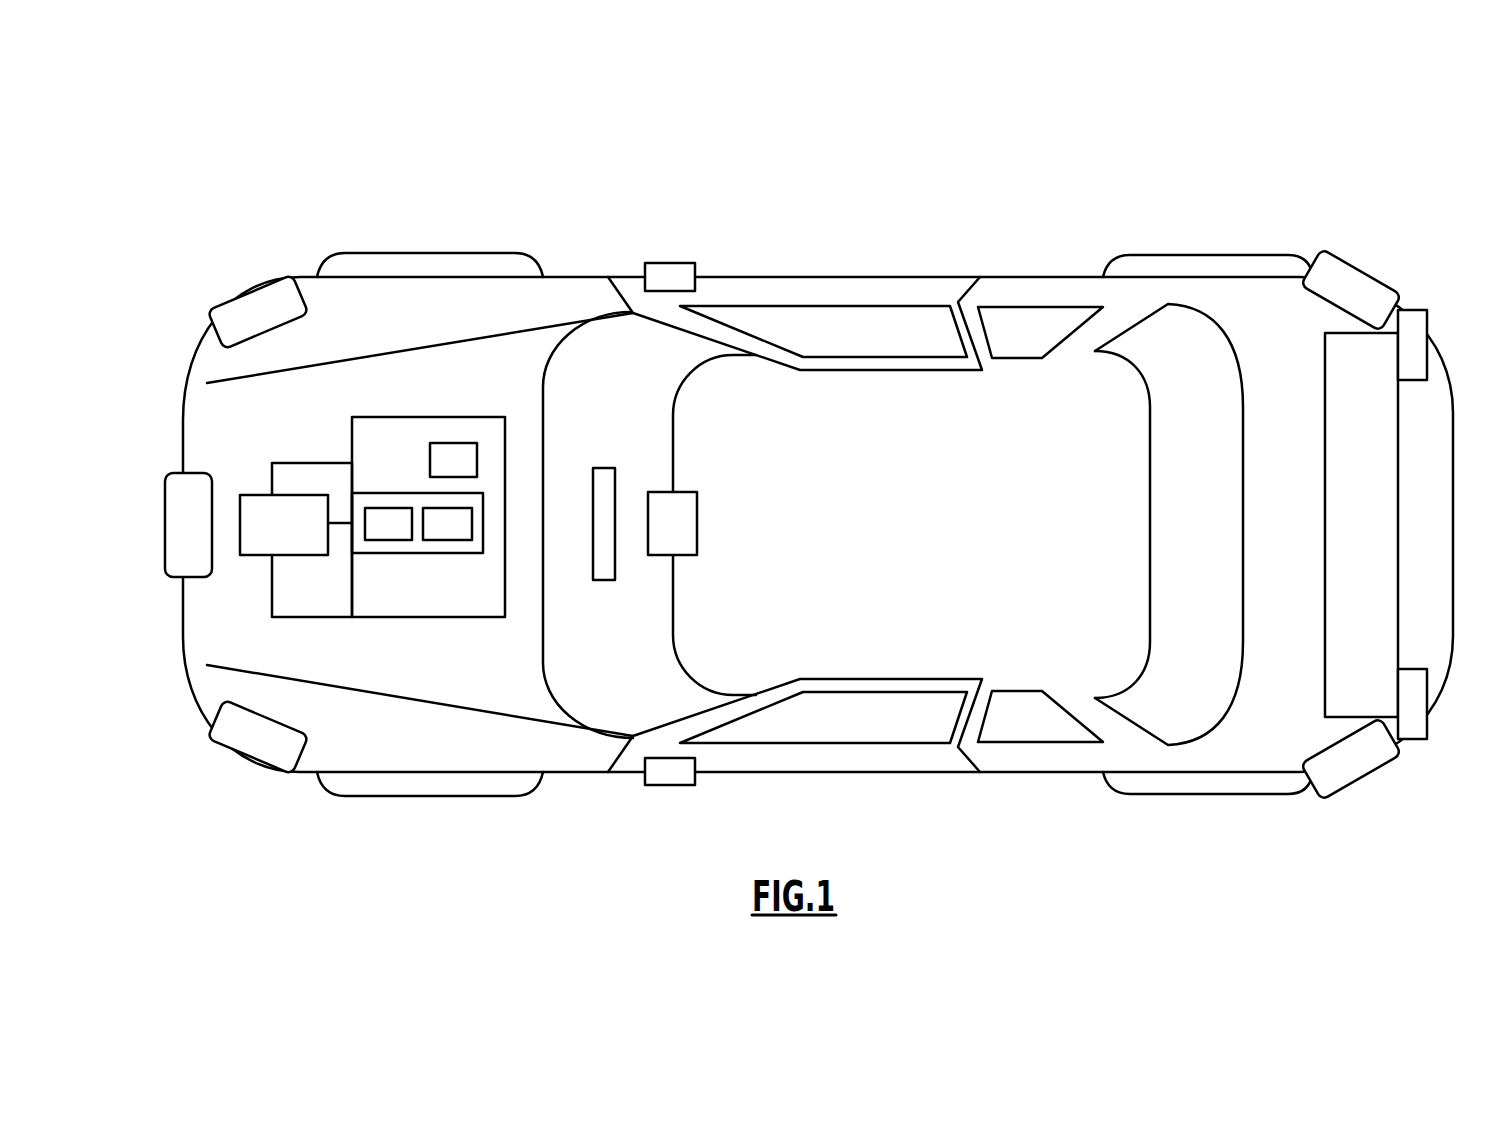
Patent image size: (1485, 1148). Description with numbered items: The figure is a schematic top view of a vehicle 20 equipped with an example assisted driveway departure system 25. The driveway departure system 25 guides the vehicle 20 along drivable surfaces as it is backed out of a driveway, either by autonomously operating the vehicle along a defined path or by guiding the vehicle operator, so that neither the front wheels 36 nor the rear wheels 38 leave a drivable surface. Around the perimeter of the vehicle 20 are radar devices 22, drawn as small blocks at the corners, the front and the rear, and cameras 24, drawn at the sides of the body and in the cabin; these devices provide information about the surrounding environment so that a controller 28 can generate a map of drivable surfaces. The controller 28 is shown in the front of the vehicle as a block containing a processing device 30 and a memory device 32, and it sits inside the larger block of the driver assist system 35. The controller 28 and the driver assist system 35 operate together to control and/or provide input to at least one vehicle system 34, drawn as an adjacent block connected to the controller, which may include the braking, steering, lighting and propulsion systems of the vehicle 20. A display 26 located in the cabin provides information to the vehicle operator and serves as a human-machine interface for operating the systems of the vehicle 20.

The vehicle 20 is at (1128, 157).
The radar devices 22 is at (243, 288).
The cameras 24 is at (674, 263).
The driveway departure system 25 is at (452, 457).
The display 26 is at (608, 468).
The controller 28 is at (417, 493).
The processing device 30 is at (383, 530).
The memory device 32 is at (443, 530).
The vehicle system 34 is at (263, 543).
The driver assist system 35 is at (400, 443).
The front wheels 36 is at (505, 253).
The rear wheels 38 is at (1218, 253).